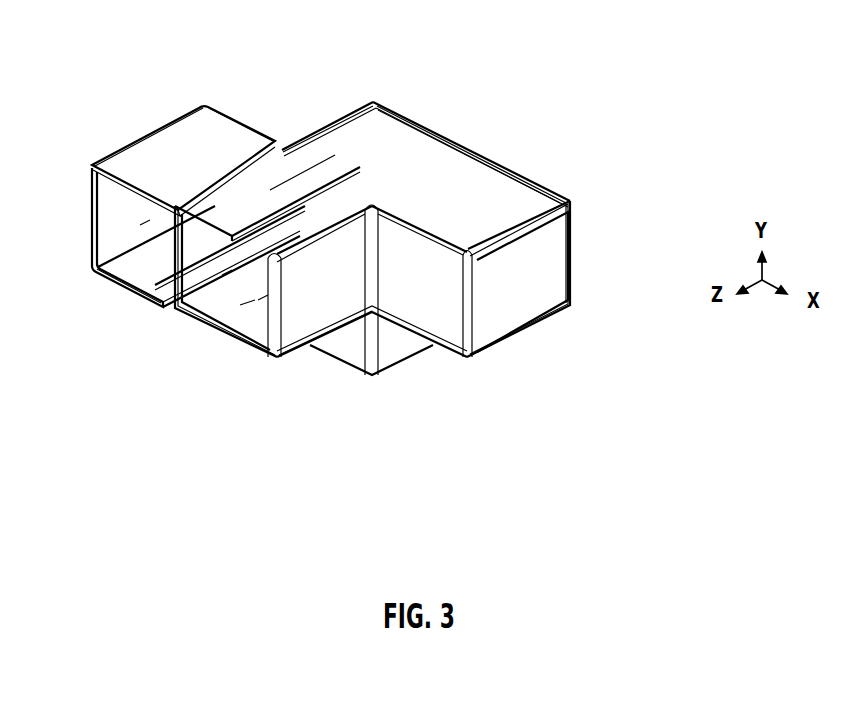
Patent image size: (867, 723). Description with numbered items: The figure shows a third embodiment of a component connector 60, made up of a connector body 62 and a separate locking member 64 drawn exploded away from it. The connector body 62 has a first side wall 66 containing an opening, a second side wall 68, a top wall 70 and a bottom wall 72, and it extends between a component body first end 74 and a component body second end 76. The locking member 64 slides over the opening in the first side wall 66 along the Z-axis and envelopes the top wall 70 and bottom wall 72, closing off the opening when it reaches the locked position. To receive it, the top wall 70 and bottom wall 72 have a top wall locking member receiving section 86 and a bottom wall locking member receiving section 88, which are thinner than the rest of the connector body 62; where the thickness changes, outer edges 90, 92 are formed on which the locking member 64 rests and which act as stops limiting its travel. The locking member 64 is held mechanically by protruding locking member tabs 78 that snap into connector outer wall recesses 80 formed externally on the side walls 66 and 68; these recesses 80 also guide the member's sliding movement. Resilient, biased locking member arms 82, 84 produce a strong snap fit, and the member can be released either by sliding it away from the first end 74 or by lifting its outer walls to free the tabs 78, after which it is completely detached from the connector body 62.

The component connector 60 is at (415, 248).
The connector body 62 is at (372, 290).
The locking member 64 is at (248, 88).
The first side wall (opening) 66 is at (195, 180).
The second side wall 68 is at (340, 412).
The top wall 70 is at (421, 221).
The bottom wall 72 is at (247, 335).
The component body first end 74 is at (226, 414).
The component body second end 76 is at (548, 316).
The locking member tabs 78 is at (107, 329).
The connector outer wall recesses 80 is at (203, 366).
The locking member arm 82 is at (104, 317).
The locking member arm 84 is at (153, 85).
The top wall locking member receiving section 86 is at (383, 89).
The bottom wall locking member receiving section 88 is at (200, 371).
The outer edge 90 is at (259, 414).
The outer edge 92 is at (520, 154).